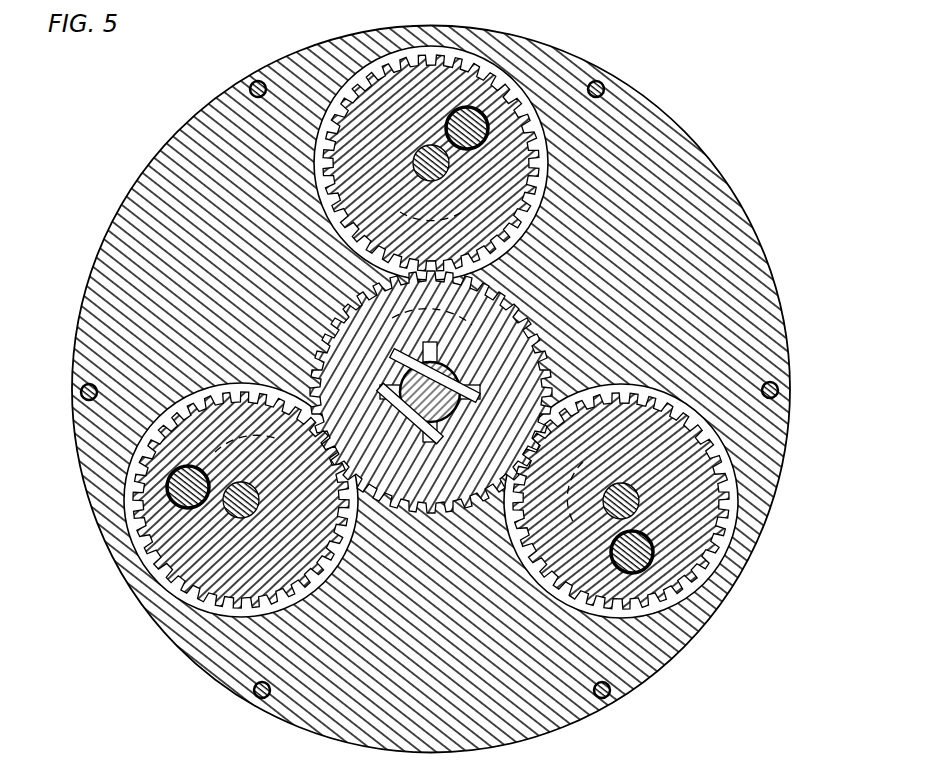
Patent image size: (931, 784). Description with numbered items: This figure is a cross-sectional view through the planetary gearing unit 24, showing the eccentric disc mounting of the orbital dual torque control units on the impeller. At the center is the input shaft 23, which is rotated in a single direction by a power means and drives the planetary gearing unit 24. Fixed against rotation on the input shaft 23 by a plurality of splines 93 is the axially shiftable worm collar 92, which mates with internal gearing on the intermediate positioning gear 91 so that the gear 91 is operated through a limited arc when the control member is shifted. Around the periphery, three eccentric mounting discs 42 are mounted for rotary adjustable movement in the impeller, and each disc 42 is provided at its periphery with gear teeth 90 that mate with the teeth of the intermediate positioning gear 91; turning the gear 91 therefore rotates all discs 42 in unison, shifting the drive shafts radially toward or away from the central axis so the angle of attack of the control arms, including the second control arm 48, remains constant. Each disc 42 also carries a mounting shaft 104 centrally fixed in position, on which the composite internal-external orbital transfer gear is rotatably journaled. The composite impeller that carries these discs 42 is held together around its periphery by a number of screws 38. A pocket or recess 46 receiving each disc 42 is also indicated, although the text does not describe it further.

The planetary gearing unit 24 is at (753, 231).
The screws 38 is at (256, 82).
The eccentric mounting disc 42 is at (313, 192).
The gear pockets 46 is at (350, 542).
The second control arm 48 is at (448, 118).
The gear teeth 90 is at (478, 52).
The intermediate positioning gear 91 is at (536, 330).
The worm collar 92 is at (480, 360).
The splines 93 is at (450, 427).
The input shaft 23 is at (471, 401).
The mounting shaft 104 is at (446, 175).